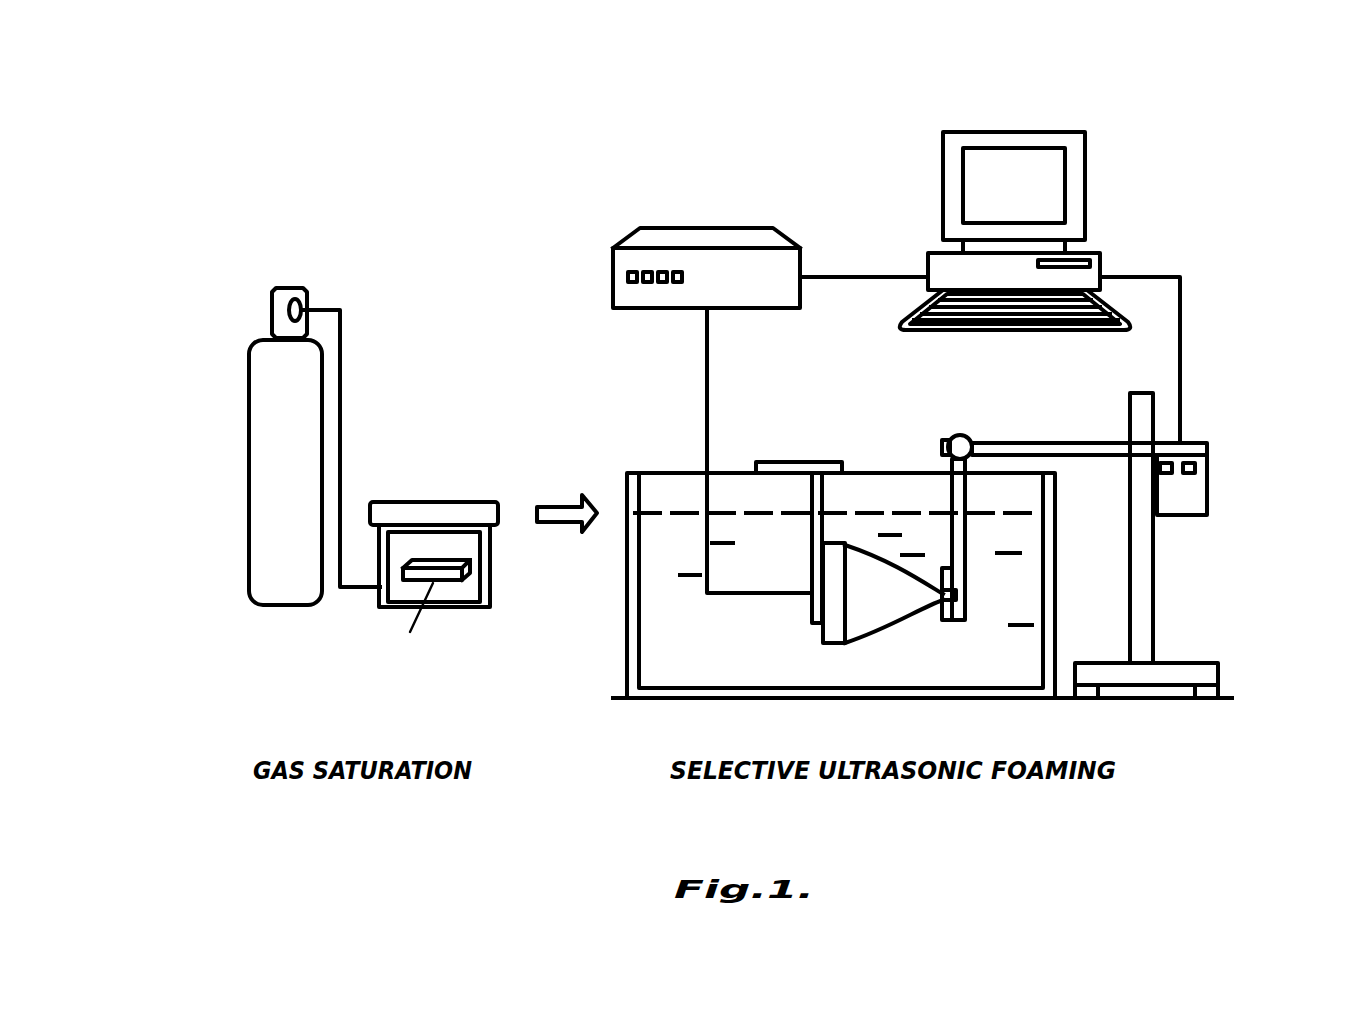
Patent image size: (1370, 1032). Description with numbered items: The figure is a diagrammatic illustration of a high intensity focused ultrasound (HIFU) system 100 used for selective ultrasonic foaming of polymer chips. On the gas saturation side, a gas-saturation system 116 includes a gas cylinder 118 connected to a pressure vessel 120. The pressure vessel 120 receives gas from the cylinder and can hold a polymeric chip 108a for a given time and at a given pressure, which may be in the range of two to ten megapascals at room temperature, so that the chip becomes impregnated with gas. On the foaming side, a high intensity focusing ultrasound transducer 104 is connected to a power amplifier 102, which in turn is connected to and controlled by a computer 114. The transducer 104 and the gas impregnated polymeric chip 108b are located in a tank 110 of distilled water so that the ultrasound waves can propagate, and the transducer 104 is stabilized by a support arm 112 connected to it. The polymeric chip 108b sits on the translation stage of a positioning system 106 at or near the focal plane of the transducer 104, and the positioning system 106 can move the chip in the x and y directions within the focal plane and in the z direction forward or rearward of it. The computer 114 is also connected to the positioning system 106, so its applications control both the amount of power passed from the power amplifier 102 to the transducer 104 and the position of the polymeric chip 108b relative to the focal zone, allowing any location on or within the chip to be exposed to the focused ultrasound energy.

The high intensity focused ultrasound (HIFU) system 100 is at (1190, 124).
The power amplifier 102 is at (613, 275).
The high intensity focusing ultrasound transducer 104 is at (874, 561).
The positioning system 106 is at (1208, 470).
The polymeric chip 108a is at (410, 580).
The gas impregnated polymeric chip 108b is at (947, 570).
The tank 110 is at (627, 608).
The support arm 112 is at (793, 462).
The computer 114 is at (943, 180).
The gas-saturation system 116 is at (212, 300).
The gas cylinder 118 is at (249, 347).
The pressure vessel 120 is at (490, 560).